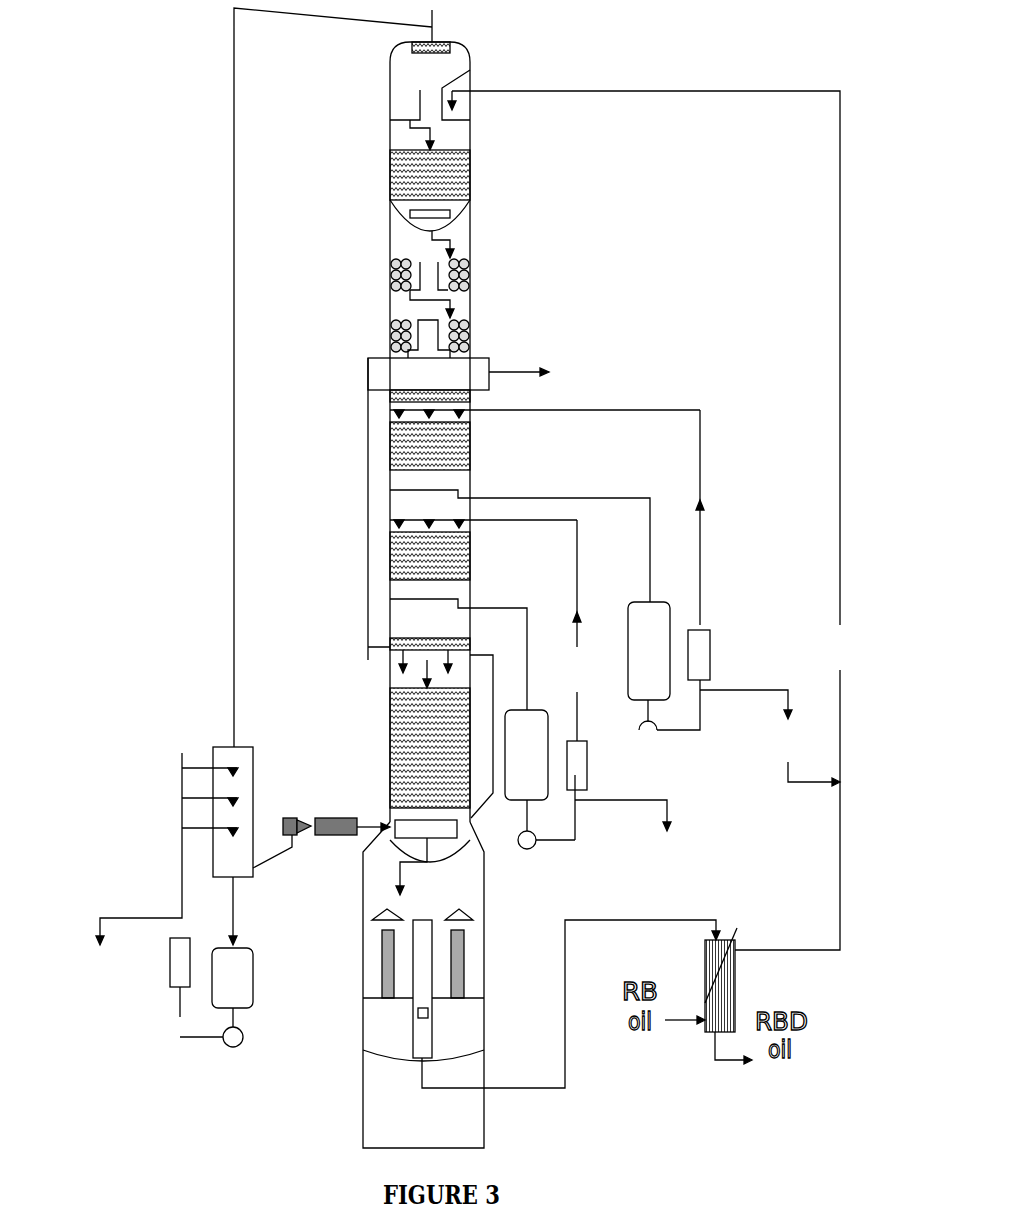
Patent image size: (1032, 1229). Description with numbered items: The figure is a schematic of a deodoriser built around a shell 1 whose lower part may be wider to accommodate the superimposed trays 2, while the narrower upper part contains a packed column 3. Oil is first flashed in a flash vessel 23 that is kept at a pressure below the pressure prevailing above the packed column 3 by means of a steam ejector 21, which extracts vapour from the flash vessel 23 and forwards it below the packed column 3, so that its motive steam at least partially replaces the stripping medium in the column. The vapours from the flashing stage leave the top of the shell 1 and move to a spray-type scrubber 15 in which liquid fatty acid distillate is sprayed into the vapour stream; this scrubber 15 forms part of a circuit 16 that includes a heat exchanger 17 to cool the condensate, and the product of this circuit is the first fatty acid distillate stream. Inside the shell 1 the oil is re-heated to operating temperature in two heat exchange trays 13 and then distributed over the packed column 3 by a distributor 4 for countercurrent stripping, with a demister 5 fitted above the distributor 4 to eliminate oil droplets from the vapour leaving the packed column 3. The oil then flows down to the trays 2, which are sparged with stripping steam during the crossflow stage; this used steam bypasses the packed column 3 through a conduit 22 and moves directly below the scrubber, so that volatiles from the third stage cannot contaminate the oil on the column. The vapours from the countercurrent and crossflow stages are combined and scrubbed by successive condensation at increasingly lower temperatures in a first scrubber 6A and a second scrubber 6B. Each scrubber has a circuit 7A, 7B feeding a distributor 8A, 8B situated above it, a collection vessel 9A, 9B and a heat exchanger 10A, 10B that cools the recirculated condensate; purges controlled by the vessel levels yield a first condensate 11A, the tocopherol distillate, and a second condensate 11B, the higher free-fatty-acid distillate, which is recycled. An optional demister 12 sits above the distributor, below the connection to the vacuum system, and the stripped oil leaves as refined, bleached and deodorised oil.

The shell 1 is at (362, 985).
The trays 2 is at (473, 946).
The packed column 3 is at (425, 750).
The distributor 4 is at (385, 645).
The demister 5 is at (428, 630).
The first scrubber 6A is at (430, 548).
The second scrubber 6B is at (420, 432).
The first circuit 7A is at (575, 642).
The second circuit 7B is at (702, 545).
The first distributor 8A is at (420, 498).
The second distributor 8B is at (420, 395).
The first collection vessel 9A is at (527, 750).
The second collection vessel 9B is at (653, 640).
The first heat exchanger 10A is at (588, 742).
The second heat exchanger 10B is at (702, 646).
The first condensate 11A is at (670, 820).
The second condensate 11B is at (798, 712).
The demister 12 is at (433, 387).
The heat exchange trays 13 is at (470, 317).
The scrubber 15 is at (250, 802).
The circuit 16 is at (180, 865).
The heat exchanger 17 is at (185, 951).
The steam ejector 21 is at (337, 825).
The conduit 22 is at (478, 812).
The flash vessel 23 is at (440, 173).